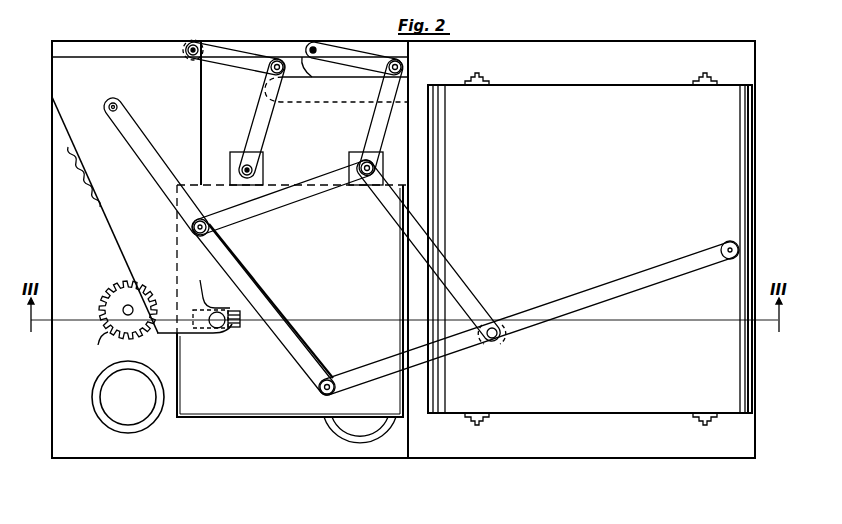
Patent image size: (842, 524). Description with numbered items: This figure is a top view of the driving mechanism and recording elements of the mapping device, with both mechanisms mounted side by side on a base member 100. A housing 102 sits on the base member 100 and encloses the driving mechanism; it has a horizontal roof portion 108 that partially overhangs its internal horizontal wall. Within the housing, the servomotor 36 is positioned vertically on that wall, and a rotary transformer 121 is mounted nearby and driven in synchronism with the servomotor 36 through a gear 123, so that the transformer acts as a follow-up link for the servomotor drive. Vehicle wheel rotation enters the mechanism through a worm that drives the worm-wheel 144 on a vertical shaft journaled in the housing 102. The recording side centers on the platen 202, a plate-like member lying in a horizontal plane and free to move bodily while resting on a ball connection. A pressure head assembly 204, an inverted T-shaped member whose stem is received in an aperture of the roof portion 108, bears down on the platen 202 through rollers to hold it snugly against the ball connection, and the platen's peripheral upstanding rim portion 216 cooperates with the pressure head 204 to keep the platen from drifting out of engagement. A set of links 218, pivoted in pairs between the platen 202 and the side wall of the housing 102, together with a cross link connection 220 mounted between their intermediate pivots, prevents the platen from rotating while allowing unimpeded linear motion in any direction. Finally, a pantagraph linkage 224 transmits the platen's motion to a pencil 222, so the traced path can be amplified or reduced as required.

The servomotor 36 is at (374, 440).
The base member 100 is at (648, 455).
The housing 102 is at (263, 460).
The horizontal roof portion 108 is at (112, 238).
The rotary transformer 121 is at (152, 426).
The gear 123 is at (100, 338).
The worm-wheel 144 is at (78, 188).
The platen 202 is at (254, 415).
The pressure head assembly 204 is at (231, 337).
The rim portion 216 is at (199, 412).
The links 218 is at (233, 48).
The cross link connection 220 is at (308, 50).
The pencil 222 is at (724, 246).
The pantagraph linkage 224 is at (536, 330).